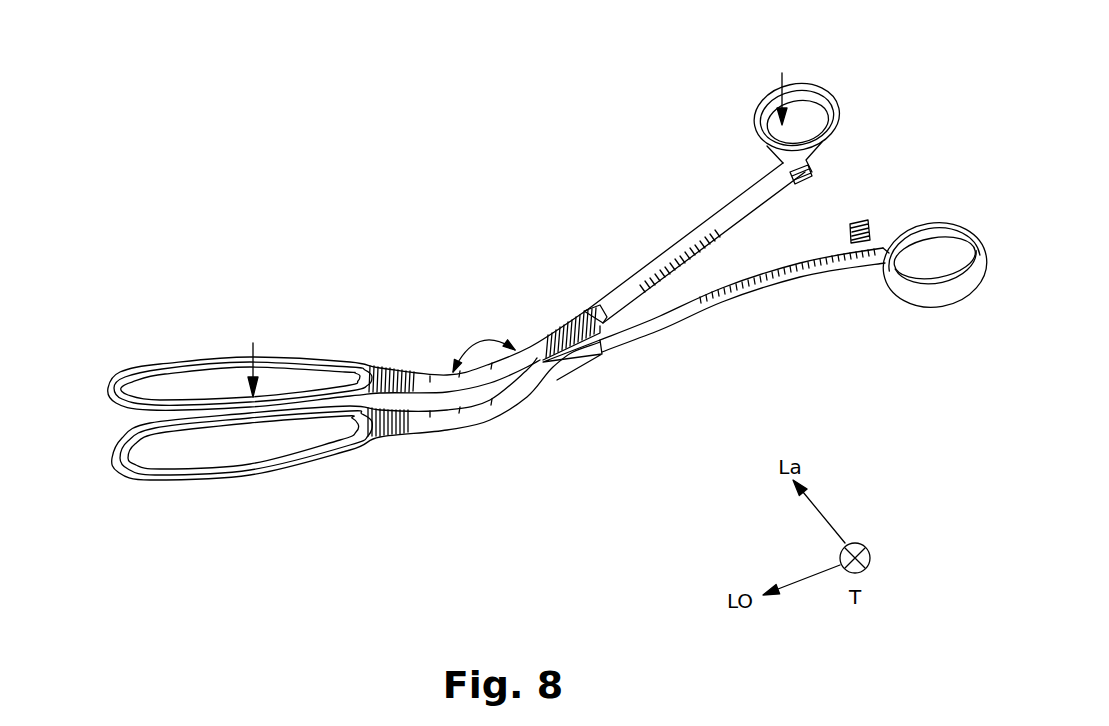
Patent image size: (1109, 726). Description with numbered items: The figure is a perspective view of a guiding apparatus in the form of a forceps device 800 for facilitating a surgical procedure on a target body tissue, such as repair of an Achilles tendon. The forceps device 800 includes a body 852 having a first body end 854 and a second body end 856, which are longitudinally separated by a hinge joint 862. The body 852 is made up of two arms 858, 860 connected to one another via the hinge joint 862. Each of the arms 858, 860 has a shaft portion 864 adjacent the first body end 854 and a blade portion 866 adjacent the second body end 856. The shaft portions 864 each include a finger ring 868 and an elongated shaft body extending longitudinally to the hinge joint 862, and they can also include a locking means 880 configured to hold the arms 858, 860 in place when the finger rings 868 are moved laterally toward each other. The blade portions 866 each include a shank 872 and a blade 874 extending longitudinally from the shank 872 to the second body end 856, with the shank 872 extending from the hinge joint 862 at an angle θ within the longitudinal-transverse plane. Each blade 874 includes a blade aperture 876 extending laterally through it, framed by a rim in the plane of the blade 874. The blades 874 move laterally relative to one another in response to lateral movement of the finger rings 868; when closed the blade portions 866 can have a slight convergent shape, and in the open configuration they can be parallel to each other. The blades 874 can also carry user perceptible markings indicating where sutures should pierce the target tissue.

The forceps device 800 is at (259, 251).
The body 852 is at (473, 462).
The first body end 854 is at (895, 147).
The second body end 856 is at (90, 391).
The arm 858 is at (620, 275).
The arm 860 is at (727, 313).
The hinge joint 862 is at (541, 336).
The shaft portion 864 is at (782, 268).
The finger ring 868 is at (805, 88).
The blade portion 866 is at (358, 362).
The shank 872 is at (518, 405).
The blade 874 is at (285, 490).
The blade aperture 876 is at (200, 453).
The locking means 880 is at (812, 172).